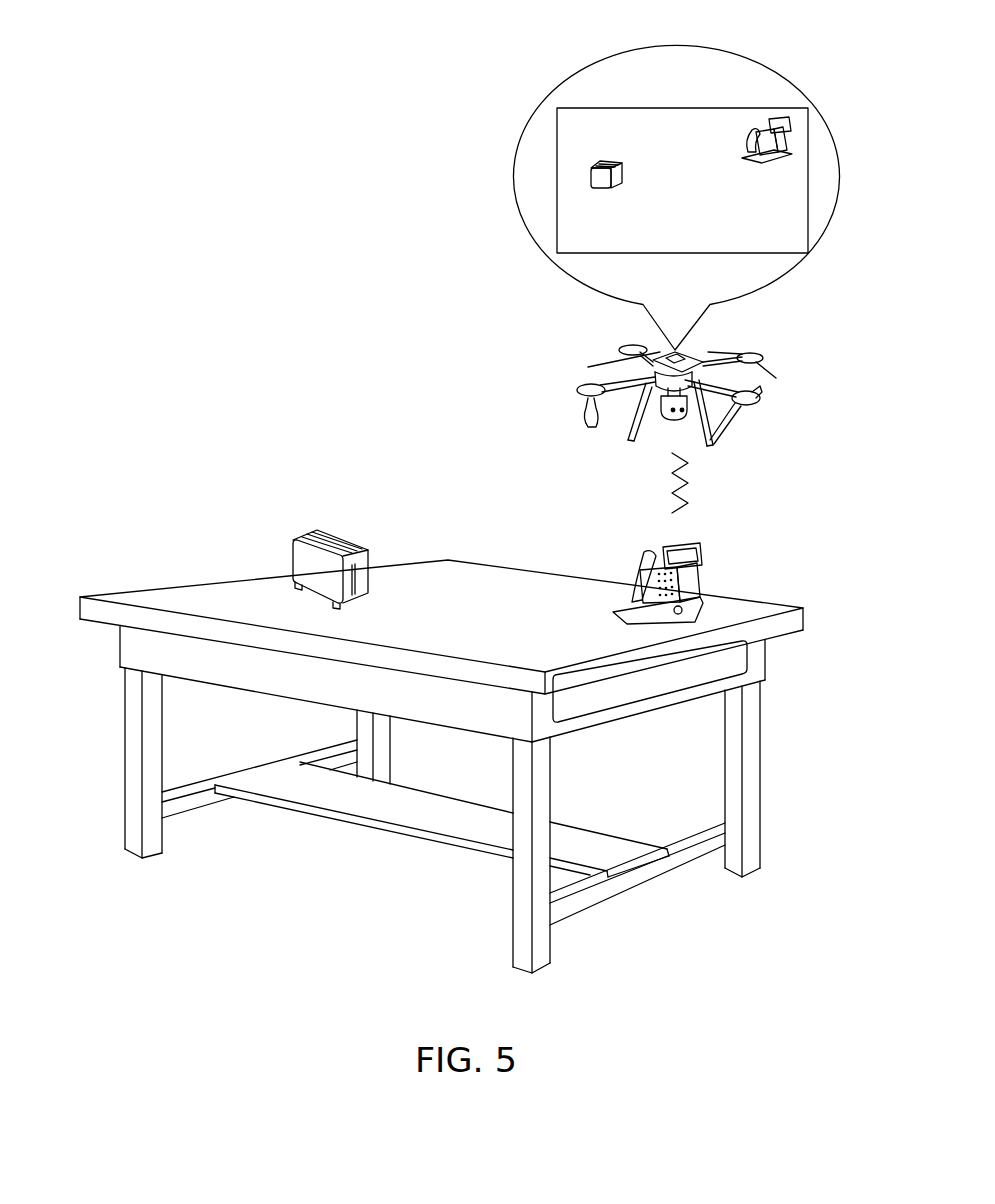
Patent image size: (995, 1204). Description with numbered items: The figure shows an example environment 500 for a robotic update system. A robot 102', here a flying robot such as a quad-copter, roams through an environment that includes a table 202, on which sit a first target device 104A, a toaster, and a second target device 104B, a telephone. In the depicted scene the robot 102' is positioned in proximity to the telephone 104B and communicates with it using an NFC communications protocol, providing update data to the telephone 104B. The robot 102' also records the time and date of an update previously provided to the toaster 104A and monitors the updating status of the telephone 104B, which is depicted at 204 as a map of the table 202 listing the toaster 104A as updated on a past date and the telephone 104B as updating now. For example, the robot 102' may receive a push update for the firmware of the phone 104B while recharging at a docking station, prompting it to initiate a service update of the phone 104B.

The example environment 500 is at (466, 48).
The updating status 204 is at (508, 220).
The table 202 is at (494, 558).
The first target device 104A is at (308, 514).
The second target device 104B is at (617, 543).
The robot 102' is at (703, 425).